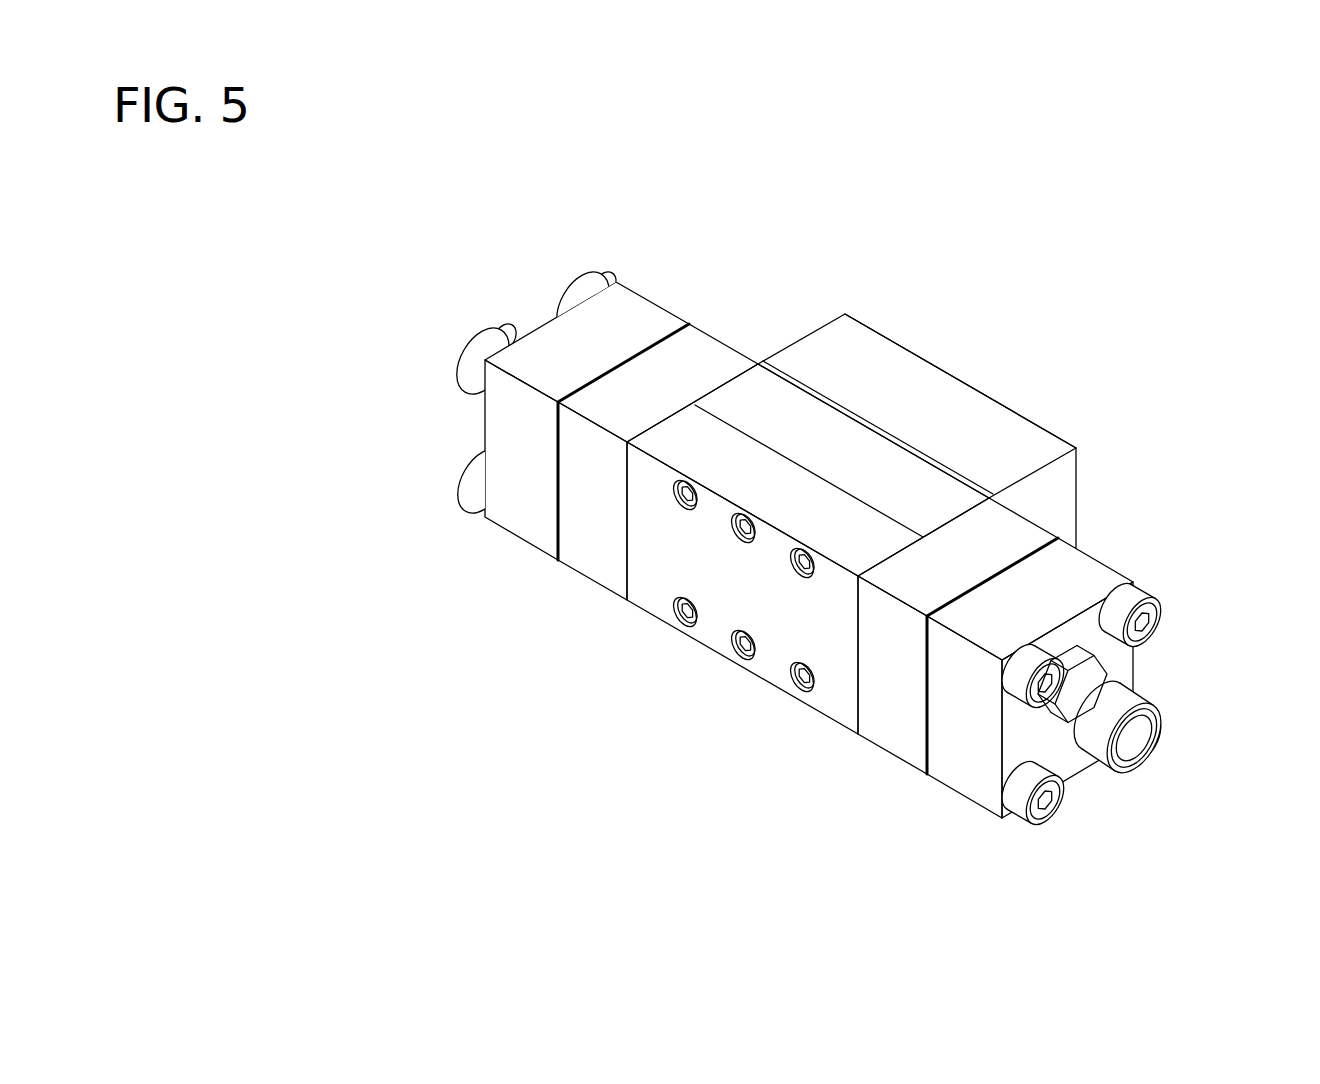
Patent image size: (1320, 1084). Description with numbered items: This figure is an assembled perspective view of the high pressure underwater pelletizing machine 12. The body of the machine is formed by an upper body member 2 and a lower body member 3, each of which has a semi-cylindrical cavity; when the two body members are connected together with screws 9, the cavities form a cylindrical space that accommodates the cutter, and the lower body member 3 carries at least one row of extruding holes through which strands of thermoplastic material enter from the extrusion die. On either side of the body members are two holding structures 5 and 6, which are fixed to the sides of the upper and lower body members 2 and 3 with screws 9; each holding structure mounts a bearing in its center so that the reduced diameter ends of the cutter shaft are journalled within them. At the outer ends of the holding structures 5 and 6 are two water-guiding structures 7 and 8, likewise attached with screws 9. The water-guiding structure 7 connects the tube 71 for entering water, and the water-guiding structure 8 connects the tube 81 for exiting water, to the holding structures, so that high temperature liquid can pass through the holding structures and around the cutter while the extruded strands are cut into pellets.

The upper body member 2 is at (678, 578).
The lower body member 3 is at (821, 424).
The holding structure 5 is at (1017, 532).
The holding structure 6 is at (708, 353).
The water-guiding structure 7 is at (1108, 548).
The tube for entering water 71 is at (1141, 718).
The water-guiding structure 8 is at (548, 316).
The tube for exiting water 81 is at (480, 393).
The screws 9 is at (594, 272).
The high pressure underwater pelletizing machine 12 is at (967, 376).